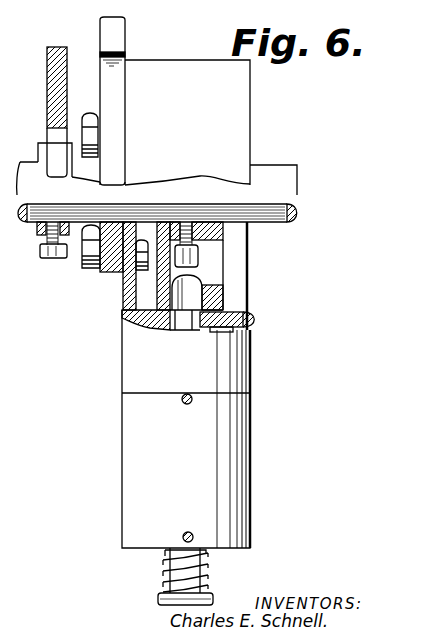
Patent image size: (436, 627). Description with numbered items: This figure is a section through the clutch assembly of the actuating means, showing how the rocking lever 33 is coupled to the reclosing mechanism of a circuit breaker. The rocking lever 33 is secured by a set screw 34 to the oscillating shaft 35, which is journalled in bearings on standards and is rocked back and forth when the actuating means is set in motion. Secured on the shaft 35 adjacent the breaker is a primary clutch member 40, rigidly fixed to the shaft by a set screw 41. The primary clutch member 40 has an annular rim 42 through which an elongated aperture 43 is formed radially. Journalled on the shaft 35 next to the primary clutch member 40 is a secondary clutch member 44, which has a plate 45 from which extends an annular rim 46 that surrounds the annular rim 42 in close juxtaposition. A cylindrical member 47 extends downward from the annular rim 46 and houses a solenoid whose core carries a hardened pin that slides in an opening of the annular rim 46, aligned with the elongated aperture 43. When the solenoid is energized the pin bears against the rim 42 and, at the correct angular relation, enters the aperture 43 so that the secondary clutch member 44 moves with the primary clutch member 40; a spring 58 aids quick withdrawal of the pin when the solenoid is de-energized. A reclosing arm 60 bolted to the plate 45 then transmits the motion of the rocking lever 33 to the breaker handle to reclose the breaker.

The rocking lever 33 is at (47, 68).
The set screw 34 is at (48, 258).
The oscillating shaft 35 is at (273, 202).
The primary clutch member 40 is at (223, 232).
The set screw 41 is at (198, 256).
The annular rim 42 is at (218, 300).
The elongated aperture 43 is at (197, 290).
The secondary clutch member 44 is at (223, 462).
The plate 45 is at (122, 302).
The annular rim 46 is at (238, 130).
The cylindrical member 47 is at (246, 532).
The spring 58 is at (163, 571).
The reclosing arm 60 is at (117, 52).